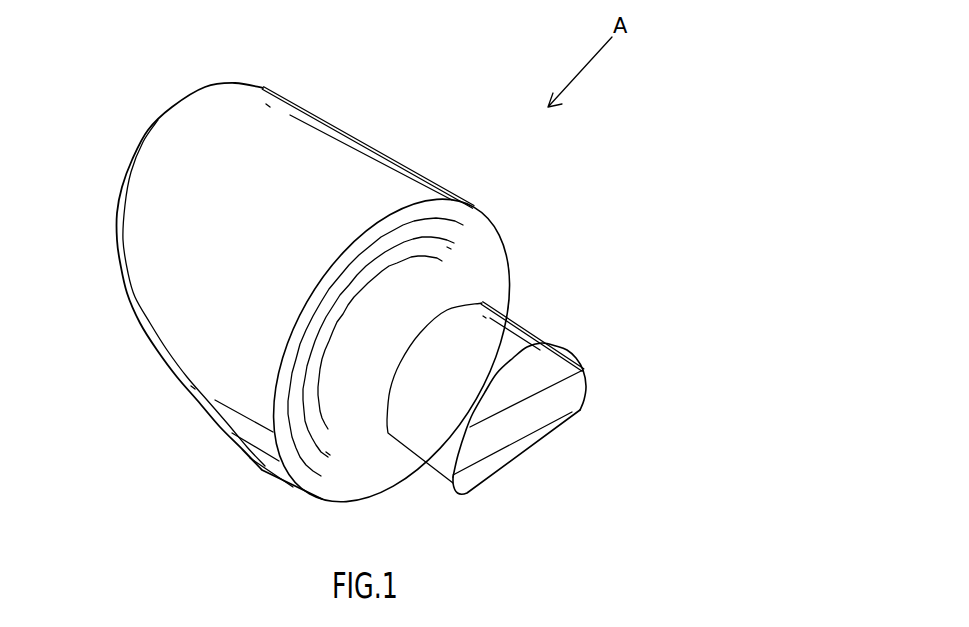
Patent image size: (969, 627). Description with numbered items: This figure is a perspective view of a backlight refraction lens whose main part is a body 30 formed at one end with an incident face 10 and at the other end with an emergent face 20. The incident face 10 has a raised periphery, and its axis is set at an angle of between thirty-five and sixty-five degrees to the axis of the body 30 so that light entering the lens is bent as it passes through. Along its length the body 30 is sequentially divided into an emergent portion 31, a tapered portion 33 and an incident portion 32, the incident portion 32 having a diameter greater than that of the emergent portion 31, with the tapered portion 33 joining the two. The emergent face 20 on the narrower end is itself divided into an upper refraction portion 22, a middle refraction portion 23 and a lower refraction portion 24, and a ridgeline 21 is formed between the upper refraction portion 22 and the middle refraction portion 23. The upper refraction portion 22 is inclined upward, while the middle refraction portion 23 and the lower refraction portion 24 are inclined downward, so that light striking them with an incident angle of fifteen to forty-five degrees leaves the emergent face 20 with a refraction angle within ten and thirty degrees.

The incident face 10 is at (127, 293).
The emergent face 20 is at (548, 398).
The ridgeline 21 is at (561, 381).
The upper refraction portion 22 is at (543, 363).
The middle refraction portion 23 is at (537, 408).
The lower refraction portion 24 is at (528, 447).
The body 30 is at (441, 315).
The emergent portion 31 is at (527, 320).
The incident portion 32 is at (428, 172).
The tapered portion 33 is at (497, 268).